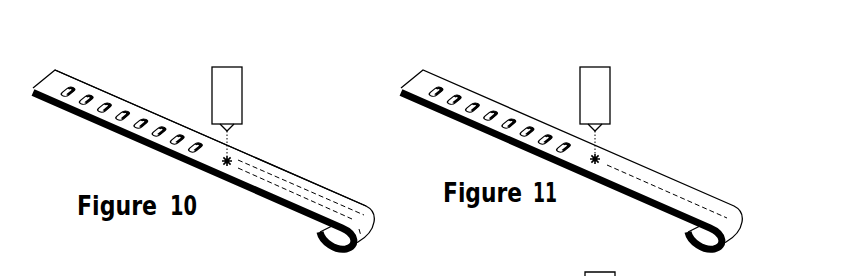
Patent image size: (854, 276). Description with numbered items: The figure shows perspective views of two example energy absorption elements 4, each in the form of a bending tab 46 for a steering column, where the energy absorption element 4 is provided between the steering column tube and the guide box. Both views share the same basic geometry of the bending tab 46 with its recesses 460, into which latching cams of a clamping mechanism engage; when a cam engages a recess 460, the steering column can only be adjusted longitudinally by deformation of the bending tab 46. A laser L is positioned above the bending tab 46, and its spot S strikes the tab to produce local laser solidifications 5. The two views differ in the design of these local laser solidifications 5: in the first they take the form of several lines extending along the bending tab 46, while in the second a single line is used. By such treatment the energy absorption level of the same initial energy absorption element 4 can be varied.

In FIG. 10, the energy absorption element 4 is at (203, 127).
In FIG. 11, the energy absorption element 4 is at (571, 127).
In FIG. 10, the bending tab 46 is at (272, 172).
In FIG. 10, the recesses 460 is at (133, 103).
In FIG. 10, the local laser solidifications 5 is at (292, 192).
In FIG. 11, the local laser solidifications 5 is at (667, 169).
In FIG. 10, the laser L is at (232, 83).
In FIG. 11, the laser L is at (619, 115).
In FIG. 10, the laser spot S is at (229, 138).